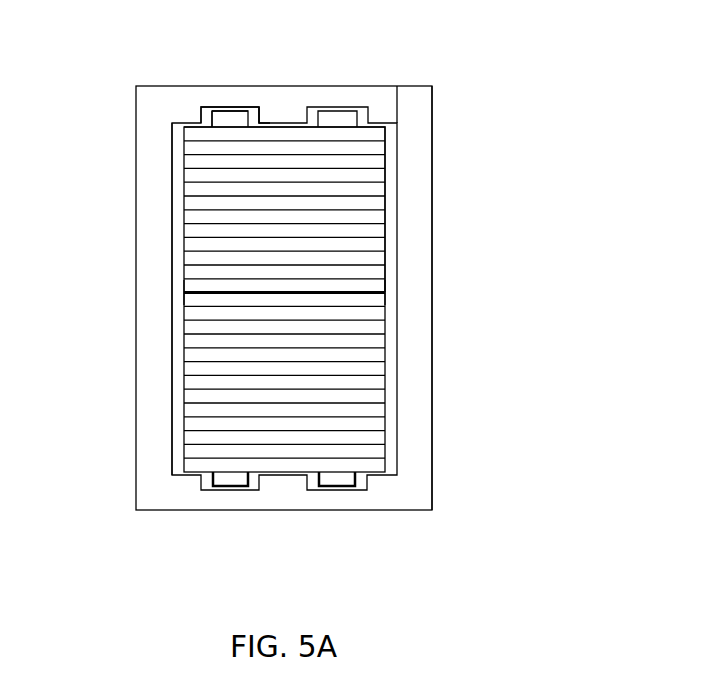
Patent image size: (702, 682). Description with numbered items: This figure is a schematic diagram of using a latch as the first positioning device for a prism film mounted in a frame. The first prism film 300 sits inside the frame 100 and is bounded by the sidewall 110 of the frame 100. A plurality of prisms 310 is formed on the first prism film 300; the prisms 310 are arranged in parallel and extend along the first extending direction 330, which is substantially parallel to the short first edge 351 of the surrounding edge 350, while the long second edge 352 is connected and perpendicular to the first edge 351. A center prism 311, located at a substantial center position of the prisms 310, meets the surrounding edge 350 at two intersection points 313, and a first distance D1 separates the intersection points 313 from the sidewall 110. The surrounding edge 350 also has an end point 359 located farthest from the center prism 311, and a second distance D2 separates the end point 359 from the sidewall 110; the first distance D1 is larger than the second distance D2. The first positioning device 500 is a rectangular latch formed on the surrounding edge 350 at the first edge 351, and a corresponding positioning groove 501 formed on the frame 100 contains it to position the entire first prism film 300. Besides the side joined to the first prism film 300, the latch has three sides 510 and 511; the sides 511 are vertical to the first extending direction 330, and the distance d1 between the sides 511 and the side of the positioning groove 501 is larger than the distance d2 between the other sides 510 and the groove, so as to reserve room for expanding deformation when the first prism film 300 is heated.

The frame 100 is at (410, 450).
The sidewall 110 is at (398, 407).
The end point 359 is at (403, 108).
The surrounding edge 350 is at (152, 20).
The first edge 351 is at (206, 107).
The second edge 352 is at (183, 228).
The first prism film 300 is at (203, 396).
The prisms 310 is at (375, 185).
The center prism 311 is at (222, 290).
The intersection points 313 is at (184, 292).
The first positioning device 500 is at (243, 121).
The side of latch 510 is at (236, 111).
The side of latch 511 is at (214, 111).
The positioning groove 501 is at (260, 119).
The first distance D1 is at (184, 354).
The distance d1 is at (213, 480).
The distance d2 is at (244, 460).
The second distance D2 is at (284, 417).
The first extending direction 330 is at (370, 596).